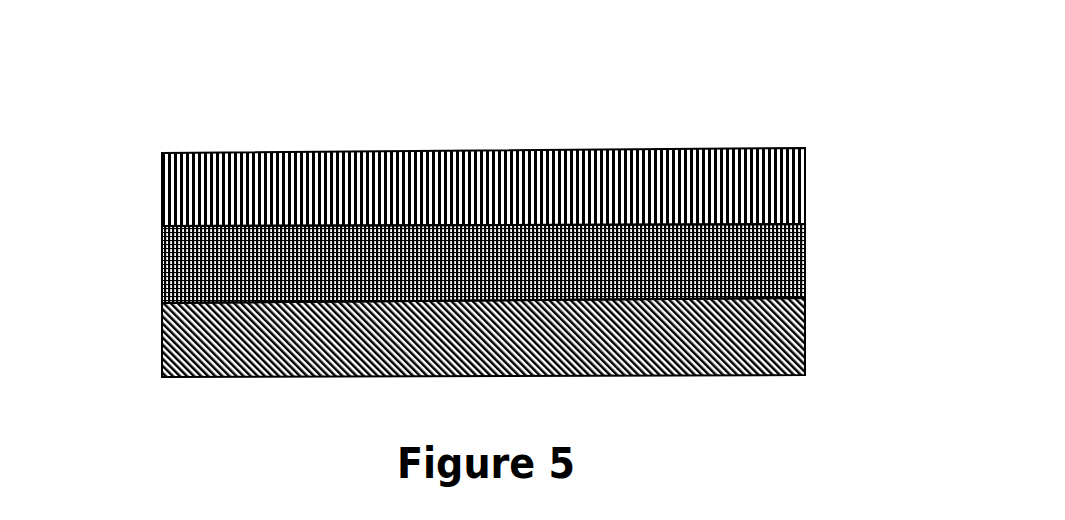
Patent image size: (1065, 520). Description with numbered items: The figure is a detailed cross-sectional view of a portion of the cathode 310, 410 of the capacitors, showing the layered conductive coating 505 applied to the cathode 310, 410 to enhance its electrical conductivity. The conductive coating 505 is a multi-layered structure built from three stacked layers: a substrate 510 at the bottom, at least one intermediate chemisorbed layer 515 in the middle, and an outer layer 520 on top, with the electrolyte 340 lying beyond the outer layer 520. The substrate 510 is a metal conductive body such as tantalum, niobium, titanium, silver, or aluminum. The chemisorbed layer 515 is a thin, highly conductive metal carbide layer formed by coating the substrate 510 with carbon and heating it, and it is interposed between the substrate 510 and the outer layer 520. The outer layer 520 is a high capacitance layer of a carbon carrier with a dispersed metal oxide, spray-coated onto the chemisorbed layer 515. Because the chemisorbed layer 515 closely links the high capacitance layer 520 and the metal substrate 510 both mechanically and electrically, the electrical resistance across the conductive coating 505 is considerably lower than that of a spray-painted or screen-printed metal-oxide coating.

The cathode 310 is at (117, 144).
The cathode 410 is at (493, 255).
The conductive coating 505 is at (152, 155).
The substrate 510 is at (806, 328).
The intermediate chemisorbed layer 515 is at (806, 253).
The outer layer 520 is at (806, 176).
The electrolyte 340 is at (737, 68).